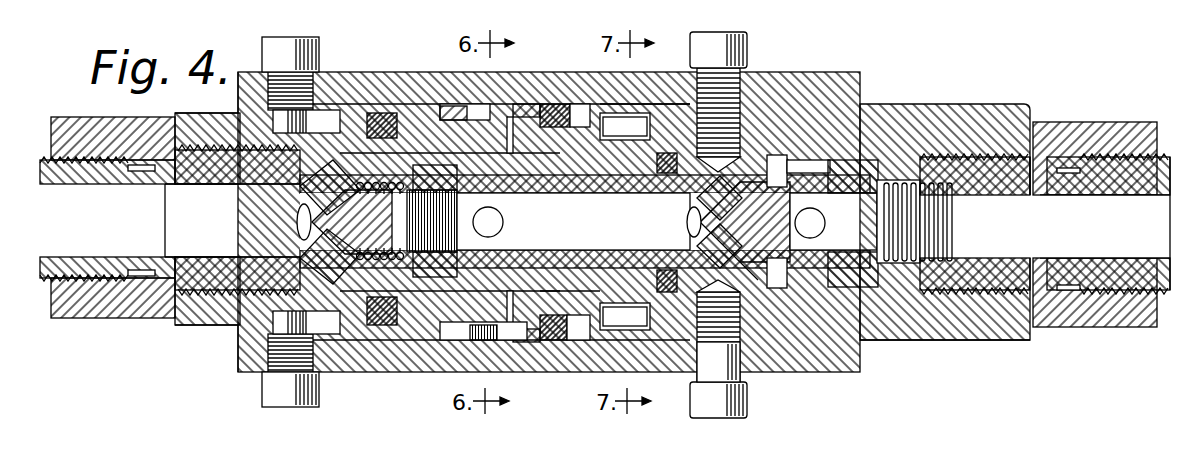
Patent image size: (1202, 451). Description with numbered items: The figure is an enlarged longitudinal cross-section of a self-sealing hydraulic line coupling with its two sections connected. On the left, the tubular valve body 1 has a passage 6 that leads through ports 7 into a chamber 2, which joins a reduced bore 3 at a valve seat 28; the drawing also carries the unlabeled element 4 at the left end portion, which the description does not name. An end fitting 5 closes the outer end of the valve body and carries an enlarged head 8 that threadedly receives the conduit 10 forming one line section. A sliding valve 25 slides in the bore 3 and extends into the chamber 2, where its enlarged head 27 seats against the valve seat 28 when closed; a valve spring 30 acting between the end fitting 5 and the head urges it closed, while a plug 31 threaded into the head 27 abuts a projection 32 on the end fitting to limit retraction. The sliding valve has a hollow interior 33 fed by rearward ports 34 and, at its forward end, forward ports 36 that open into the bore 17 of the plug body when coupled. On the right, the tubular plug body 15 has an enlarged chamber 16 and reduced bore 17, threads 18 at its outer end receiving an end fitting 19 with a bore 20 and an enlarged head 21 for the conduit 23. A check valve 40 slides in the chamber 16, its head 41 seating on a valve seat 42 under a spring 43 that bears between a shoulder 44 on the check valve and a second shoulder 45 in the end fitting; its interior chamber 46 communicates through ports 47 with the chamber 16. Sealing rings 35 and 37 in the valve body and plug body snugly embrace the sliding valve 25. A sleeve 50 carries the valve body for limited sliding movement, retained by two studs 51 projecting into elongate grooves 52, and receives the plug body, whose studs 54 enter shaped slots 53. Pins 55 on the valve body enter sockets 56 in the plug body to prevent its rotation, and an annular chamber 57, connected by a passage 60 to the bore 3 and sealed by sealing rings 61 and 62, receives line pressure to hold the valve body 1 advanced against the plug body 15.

The valve body 1 is at (397, 292).
The chamber 2 is at (413, 285).
The bore 3 is at (575, 275).
The left end cap 4 is at (185, 298).
The end fitting 5 is at (222, 313).
The passage 6 is at (188, 248).
The ports 7 is at (358, 330).
The enlarged head 8 is at (92, 305).
The conduit 10 is at (50, 262).
The plug body 15 is at (925, 330).
The chamber 16 is at (810, 290).
The bore 17 is at (758, 282).
The threads 18 is at (975, 305).
The end fitting 19 is at (1010, 300).
The bore 20 is at (960, 300).
The enlarged head 21 is at (1100, 325).
The conduit 23 is at (1172, 275).
The sliding valve 25 is at (535, 275).
The enlarged head 27 is at (445, 168).
The valve seat 28 is at (455, 275).
The valve spring 30 is at (402, 255).
The plug 31 is at (410, 190).
The projection 32 is at (385, 185).
The hollow interior 33 is at (556, 150).
The rearward ports 34 is at (490, 178).
The sealing ring 35 is at (585, 330).
The forward ports 36 is at (693, 230).
The sealing ring 37 is at (668, 282).
The check valve 40 is at (880, 285).
The head 41 is at (782, 205).
The valve seat 42 is at (780, 290).
The spring 43 is at (960, 170).
The shoulder 44 is at (935, 180).
The second shoulder 45 is at (978, 183).
The interior chamber 46 is at (893, 165).
The ports 47 is at (812, 208).
The sleeve 50 is at (640, 98).
The studs 51 is at (270, 47).
The grooves 52 is at (240, 118).
The open end slots 53 is at (718, 362).
The studs 54 is at (748, 50).
The pins 55 is at (611, 123).
The sockets 56 is at (660, 110).
The annular chamber 57 is at (478, 108).
The passage 60 is at (520, 108).
The sealing ring 61 is at (375, 300).
The sealing ring 62 is at (555, 275).